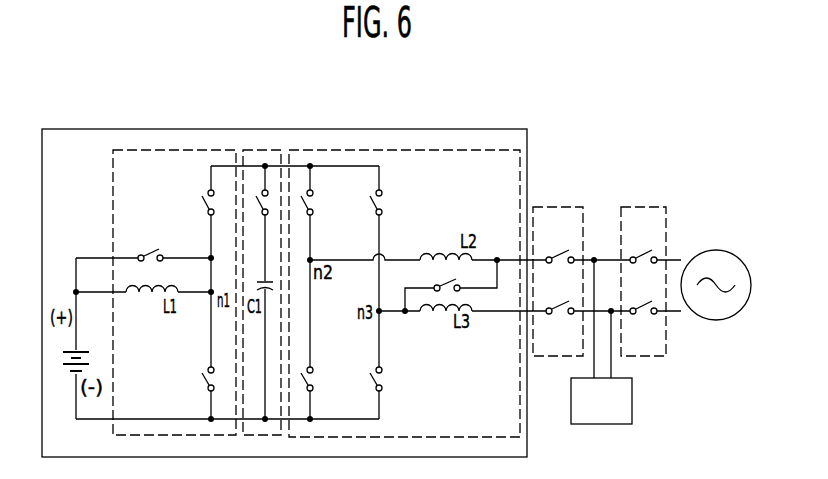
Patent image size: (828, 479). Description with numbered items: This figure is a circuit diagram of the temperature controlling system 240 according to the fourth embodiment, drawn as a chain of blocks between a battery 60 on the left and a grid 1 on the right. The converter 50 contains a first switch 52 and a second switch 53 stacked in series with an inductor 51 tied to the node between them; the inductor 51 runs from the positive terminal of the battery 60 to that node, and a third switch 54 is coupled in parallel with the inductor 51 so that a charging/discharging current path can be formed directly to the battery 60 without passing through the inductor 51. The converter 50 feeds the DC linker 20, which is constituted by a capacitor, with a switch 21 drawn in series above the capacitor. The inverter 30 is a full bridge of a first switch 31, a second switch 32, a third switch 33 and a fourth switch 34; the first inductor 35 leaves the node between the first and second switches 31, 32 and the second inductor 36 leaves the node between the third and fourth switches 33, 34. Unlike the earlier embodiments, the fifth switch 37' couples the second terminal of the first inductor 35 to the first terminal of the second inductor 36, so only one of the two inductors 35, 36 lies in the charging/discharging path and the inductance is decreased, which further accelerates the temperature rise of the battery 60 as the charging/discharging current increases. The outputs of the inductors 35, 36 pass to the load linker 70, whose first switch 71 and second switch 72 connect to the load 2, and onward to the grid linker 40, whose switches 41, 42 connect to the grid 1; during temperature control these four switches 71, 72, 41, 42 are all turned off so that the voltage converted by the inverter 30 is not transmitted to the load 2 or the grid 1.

The grid 1 is at (716, 250).
The load 2 is at (601, 424).
The DC linker 20 is at (262, 150).
The switch 21 is at (259, 203).
The inverter 30 is at (412, 150).
The first switch 31 is at (316, 205).
The second switch 32 is at (316, 380).
The third switch 33 is at (385, 205).
The fourth switch 34 is at (385, 380).
The first inductor 35 is at (441, 251).
The second inductor 36 is at (443, 318).
The fifth switch 37' is at (426, 277).
The grid linker 40 is at (646, 207).
The switch 41 is at (651, 251).
The switch 42 is at (639, 316).
The converter 50 is at (182, 150).
The inductor 51 is at (152, 300).
The first switch 52 is at (204, 202).
The second switch 53 is at (204, 383).
The third switch 54 is at (153, 250).
The battery 60 is at (64, 360).
The load linker 70 is at (562, 207).
The first switch 71 is at (567, 251).
The second switch 72 is at (555, 316).
The temperature controlling system 240 is at (326, 129).